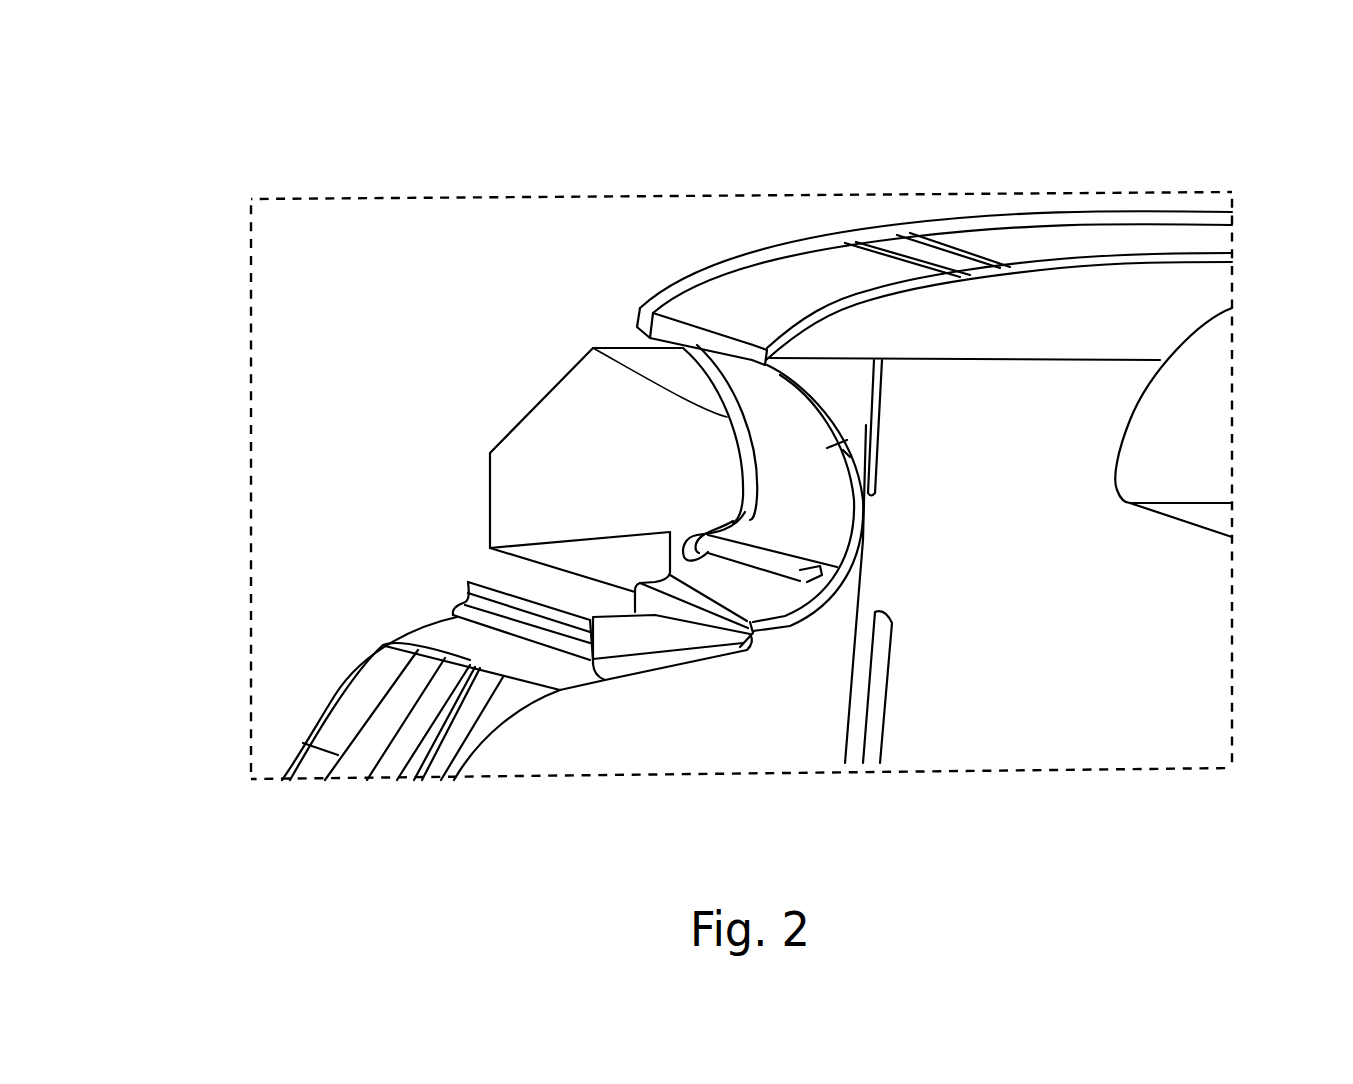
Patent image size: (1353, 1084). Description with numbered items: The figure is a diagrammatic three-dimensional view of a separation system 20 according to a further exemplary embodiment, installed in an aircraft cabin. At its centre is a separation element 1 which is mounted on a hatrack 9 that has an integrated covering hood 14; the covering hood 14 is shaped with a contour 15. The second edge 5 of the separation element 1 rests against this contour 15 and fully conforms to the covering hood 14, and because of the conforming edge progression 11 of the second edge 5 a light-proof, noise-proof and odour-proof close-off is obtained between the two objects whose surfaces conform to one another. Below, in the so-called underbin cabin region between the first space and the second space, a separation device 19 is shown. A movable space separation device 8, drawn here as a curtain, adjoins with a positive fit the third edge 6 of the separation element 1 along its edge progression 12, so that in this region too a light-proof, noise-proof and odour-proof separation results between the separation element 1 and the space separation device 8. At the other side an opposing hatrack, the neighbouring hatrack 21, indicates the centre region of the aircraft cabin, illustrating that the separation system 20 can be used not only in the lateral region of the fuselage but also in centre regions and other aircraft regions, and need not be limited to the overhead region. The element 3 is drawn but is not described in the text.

The separation system 20 is at (206, 131).
The separation element 1 is at (857, 377).
The edge progression 12 is at (850, 392).
The third edge 6 is at (860, 383).
The second edge 5 is at (858, 460).
The side wall panel 3 is at (768, 752).
The separation device 19 is at (550, 752).
The hatrack 9 is at (550, 390).
The edge progression 11 is at (593, 348).
The covering hood 14 is at (743, 487).
The contour 15 is at (757, 493).
The neighbouring hatrack 21 is at (1205, 398).
The space separation device 8 is at (1205, 658).